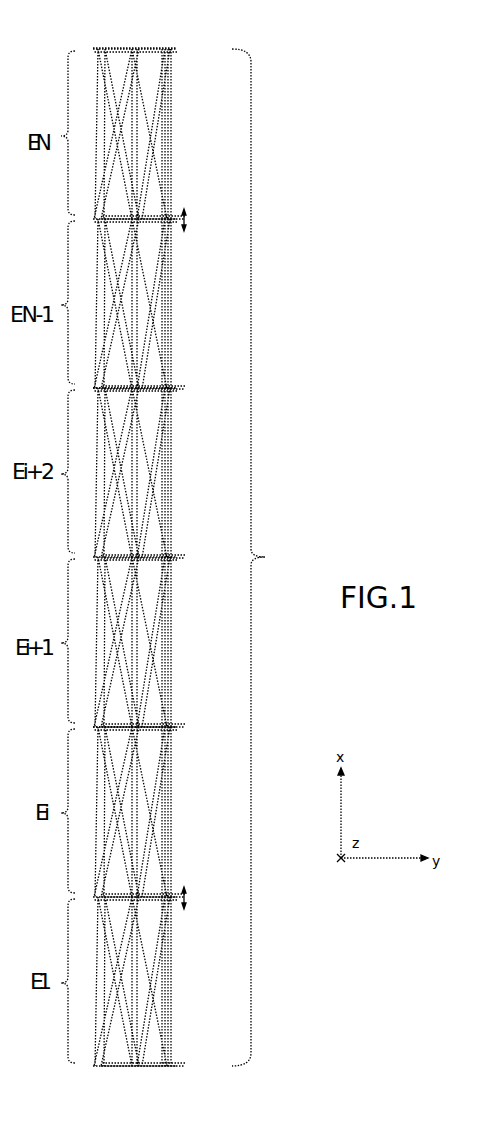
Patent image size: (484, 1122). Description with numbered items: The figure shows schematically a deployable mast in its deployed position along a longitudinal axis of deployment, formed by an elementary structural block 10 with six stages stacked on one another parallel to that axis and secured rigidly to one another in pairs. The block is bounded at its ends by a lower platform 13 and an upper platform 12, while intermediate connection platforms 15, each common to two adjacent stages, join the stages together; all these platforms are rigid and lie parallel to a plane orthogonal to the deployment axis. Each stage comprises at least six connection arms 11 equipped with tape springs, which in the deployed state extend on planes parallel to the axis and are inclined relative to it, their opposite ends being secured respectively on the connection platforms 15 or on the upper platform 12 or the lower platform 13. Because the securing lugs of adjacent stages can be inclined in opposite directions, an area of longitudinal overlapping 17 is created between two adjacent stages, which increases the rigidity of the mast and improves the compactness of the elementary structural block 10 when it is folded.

The elementary structural block 10 is at (266, 557).
The connection arm equipped with tape spring 11 is at (172, 298).
The upper platform 12 is at (148, 46).
The lower platform 13 is at (150, 1070).
The connection platform 15 is at (171, 370).
The area of longitudinal overlapping 17 is at (195, 561).